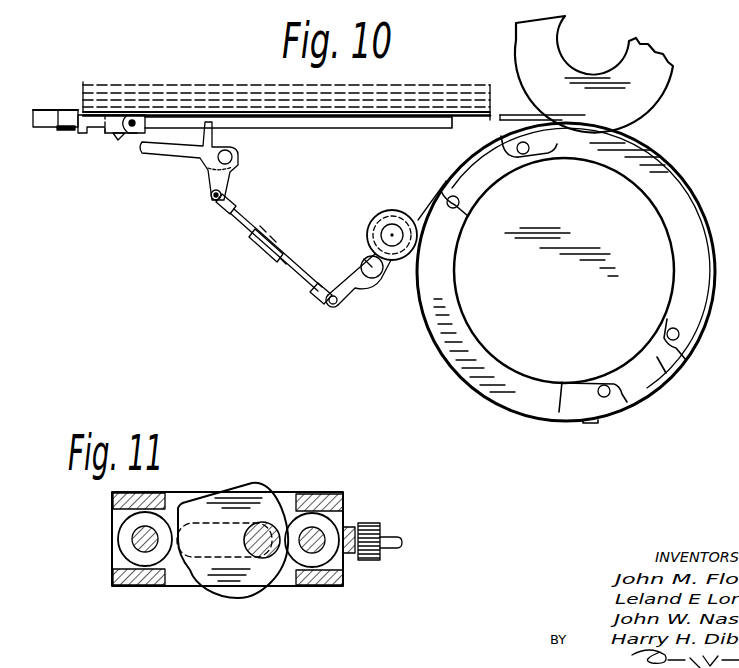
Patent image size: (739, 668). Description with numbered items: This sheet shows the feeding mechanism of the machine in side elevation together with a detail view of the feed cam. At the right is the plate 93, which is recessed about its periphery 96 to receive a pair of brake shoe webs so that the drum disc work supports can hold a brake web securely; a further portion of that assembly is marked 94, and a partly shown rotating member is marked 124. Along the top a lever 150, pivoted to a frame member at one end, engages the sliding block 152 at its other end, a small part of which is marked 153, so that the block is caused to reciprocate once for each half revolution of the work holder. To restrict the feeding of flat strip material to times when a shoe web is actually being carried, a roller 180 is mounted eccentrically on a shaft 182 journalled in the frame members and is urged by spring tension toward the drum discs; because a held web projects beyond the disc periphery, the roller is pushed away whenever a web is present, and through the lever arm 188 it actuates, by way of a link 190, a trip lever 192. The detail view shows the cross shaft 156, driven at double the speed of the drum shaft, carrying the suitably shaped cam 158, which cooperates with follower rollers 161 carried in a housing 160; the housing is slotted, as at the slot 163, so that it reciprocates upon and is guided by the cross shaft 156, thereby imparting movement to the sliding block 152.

In FIG. 10, the plate 93 is at (670, 364).
In FIG. 10, the band segment 94 is at (563, 386).
In FIG. 10, the periphery 96 is at (640, 196).
In FIG. 10, the pulley 124 is at (533, 50).
In FIG. 10, the lever 150 is at (55, 131).
In FIG. 10, the sliding block 152 is at (89, 135).
In FIG. 10, the plate edge 153 is at (58, 110).
In FIG. 10, the roller 180 is at (417, 179).
In FIG. 10, the shaft 182 is at (363, 257).
In FIG. 10, the lever arm 188 is at (347, 288).
In FIG. 10, the link 190 is at (282, 249).
In FIG. 10, the trip lever 192 is at (194, 149).
In FIG. 11, the cross shaft 156 is at (263, 588).
In FIG. 11, the cam 158 is at (240, 503).
In FIG. 11, the housing 160 is at (308, 500).
In FIG. 11, the follower rollers 161 is at (125, 531).
In FIG. 11, the slot 163 is at (207, 559).